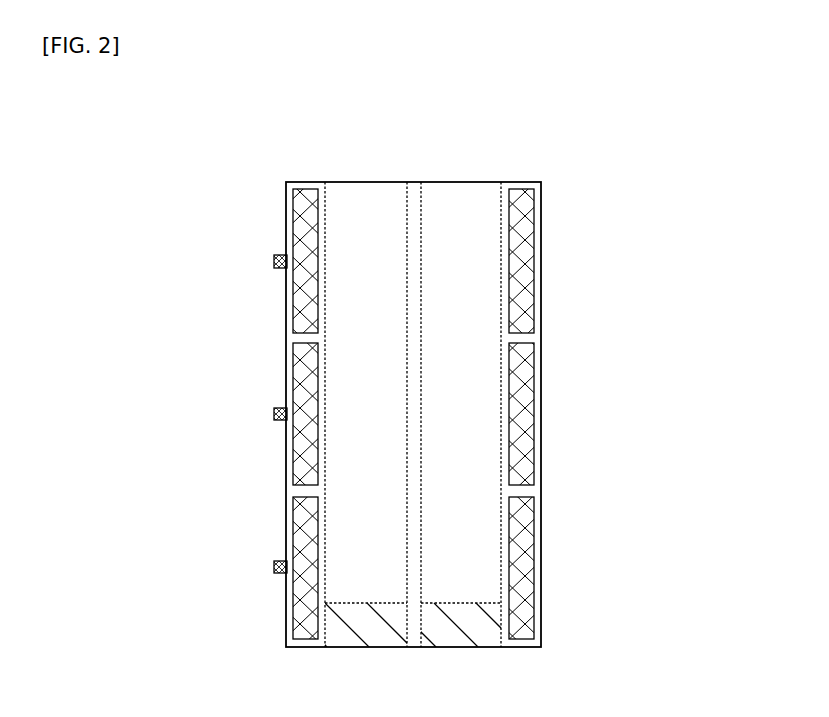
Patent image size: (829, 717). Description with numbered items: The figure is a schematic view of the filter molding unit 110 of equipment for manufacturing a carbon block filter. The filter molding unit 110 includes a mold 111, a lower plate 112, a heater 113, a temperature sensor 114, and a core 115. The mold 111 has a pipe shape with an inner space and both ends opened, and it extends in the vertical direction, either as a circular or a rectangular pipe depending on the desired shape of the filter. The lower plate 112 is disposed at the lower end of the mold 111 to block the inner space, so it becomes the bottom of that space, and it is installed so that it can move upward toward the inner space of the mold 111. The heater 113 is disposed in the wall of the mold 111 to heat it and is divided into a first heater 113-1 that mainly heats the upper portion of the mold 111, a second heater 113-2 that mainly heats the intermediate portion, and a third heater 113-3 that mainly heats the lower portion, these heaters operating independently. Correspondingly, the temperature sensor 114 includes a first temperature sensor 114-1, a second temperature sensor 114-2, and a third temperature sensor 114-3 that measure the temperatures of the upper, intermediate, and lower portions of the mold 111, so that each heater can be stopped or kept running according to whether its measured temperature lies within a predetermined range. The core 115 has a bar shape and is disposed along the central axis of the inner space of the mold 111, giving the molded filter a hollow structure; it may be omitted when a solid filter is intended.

The filter molding unit 110 is at (95, 126).
The mold 111 is at (517, 182).
The lower plate 112 is at (461, 648).
The heater 113 is at (618, 414).
The first heater 113-1 is at (541, 311).
The second heater 113-2 is at (541, 408).
The third heater 113-3 is at (575, 568).
The temperature sensor 114 is at (198, 414).
The first temperature sensor 114-1 is at (273, 262).
The second temperature sensor 114-2 is at (273, 414).
The third temperature sensor 114-3 is at (240, 568).
The core 115 is at (405, 208).